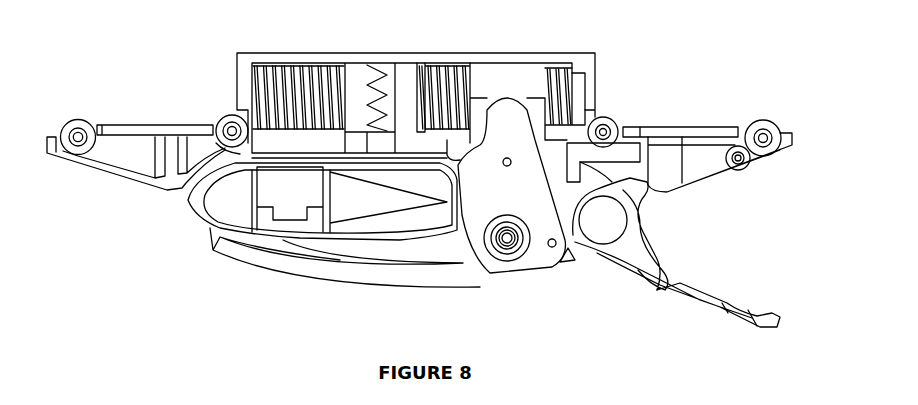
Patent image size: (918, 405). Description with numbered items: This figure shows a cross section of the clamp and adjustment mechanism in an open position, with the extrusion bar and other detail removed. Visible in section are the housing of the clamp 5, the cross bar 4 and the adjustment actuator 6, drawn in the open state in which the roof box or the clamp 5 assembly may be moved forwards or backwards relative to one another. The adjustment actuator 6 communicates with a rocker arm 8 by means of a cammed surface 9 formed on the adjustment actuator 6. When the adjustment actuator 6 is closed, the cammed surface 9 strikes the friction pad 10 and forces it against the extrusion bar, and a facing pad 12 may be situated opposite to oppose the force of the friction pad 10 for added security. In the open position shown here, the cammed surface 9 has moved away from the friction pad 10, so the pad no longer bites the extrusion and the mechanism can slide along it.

The cross bar 4 is at (197, 208).
The clamp 5 is at (292, 265).
The adjustment actuator 6 is at (731, 315).
The rocker arm 8 is at (702, 162).
The cammed surface 9 is at (663, 205).
The friction pad 10 is at (635, 148).
The facing pad 12 is at (677, 135).